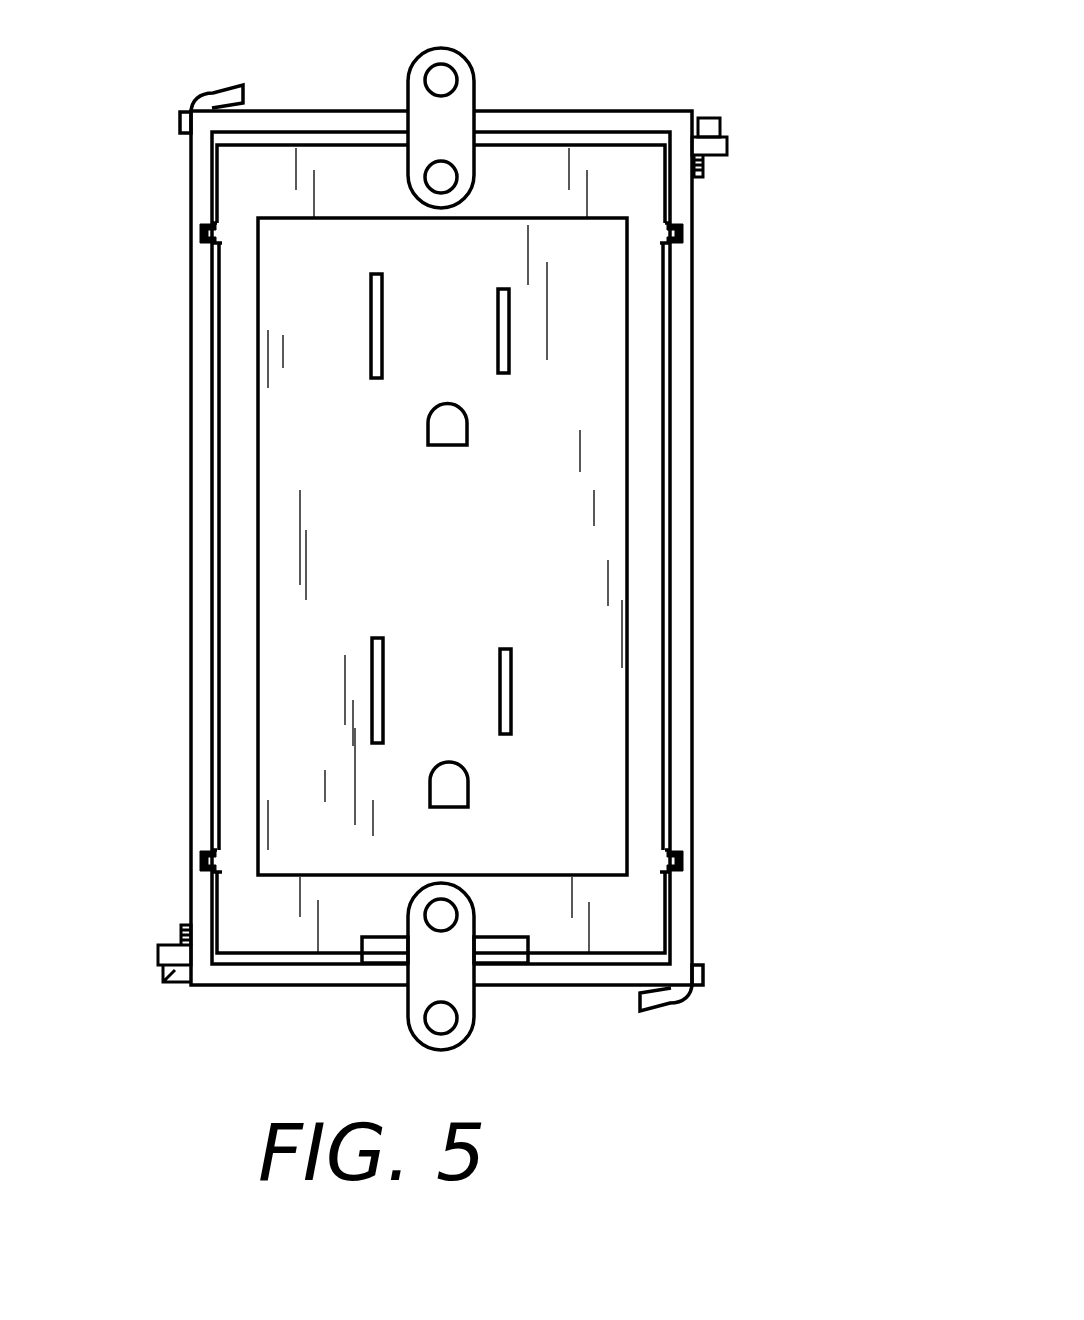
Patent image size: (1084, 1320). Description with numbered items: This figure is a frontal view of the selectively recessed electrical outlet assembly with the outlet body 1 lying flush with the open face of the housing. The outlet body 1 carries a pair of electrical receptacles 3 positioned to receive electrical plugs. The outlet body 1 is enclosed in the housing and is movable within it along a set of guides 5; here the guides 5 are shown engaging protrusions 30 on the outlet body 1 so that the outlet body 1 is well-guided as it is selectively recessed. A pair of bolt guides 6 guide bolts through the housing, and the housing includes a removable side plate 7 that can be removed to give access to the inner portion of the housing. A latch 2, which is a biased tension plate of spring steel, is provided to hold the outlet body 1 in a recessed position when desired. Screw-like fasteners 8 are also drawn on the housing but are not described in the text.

The outlet body 1 is at (617, 158).
The latch 2 is at (503, 953).
The electrical receptacles 3 is at (509, 358).
The guides 5 is at (205, 225).
The bolt guides 6 is at (533, 118).
The removable side plate 7 is at (683, 503).
The mounting screws 8 is at (720, 118).
The protrusions 30 is at (208, 245).